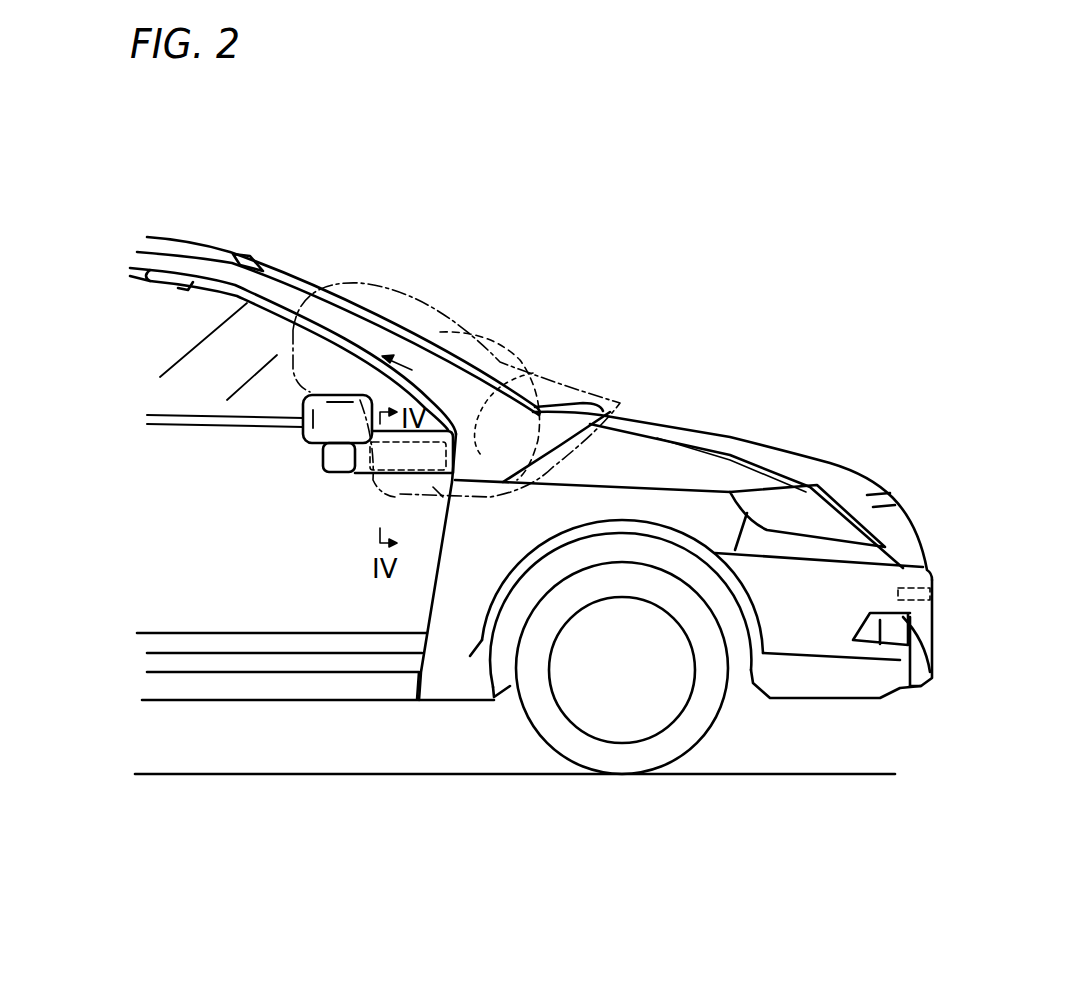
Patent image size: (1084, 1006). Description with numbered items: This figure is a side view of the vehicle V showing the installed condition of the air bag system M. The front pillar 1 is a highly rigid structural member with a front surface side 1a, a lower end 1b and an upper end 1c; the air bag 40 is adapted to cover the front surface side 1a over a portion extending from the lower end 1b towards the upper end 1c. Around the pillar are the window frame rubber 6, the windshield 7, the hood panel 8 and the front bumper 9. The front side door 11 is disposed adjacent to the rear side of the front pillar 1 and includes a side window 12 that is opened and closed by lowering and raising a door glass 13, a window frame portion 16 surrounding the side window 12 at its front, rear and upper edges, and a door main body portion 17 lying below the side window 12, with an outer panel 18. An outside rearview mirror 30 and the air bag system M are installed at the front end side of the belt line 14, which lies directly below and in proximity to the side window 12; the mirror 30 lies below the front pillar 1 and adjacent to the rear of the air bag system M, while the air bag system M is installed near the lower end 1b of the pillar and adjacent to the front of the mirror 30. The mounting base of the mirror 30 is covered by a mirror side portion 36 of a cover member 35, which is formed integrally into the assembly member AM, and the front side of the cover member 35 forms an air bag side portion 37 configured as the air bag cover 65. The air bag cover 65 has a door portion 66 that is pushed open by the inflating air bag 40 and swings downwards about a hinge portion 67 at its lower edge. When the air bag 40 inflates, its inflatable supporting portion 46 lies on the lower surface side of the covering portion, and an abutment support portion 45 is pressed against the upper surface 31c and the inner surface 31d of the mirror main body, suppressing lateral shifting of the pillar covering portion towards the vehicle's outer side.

The front pillar 1 is at (342, 270).
The front surface side 1a is at (398, 345).
The lower end 1b is at (487, 345).
The upper end 1c is at (273, 288).
The window frame rubber 6 is at (262, 262).
The windshield 7 is at (343, 396).
The hood panel 8 is at (745, 441).
The front bumper 9 is at (897, 578).
The front side door 11 is at (315, 723).
The side window 12 is at (292, 299).
The door glass 13 is at (134, 304).
The belt line 14 is at (174, 437).
The window frame portion 16 is at (163, 273).
The door main body portion 17 is at (315, 723).
The outer panel 18 is at (245, 603).
The outside rearview mirror 30 is at (303, 420).
The upper surface 31c is at (367, 396).
The inner surface 31d is at (452, 335).
The cover member 35 is at (329, 524).
The mirror side portion 36 is at (345, 465).
The air bag side portion 37 is at (357, 499).
The air bag 40 is at (450, 308).
The abutment support portion 45 is at (486, 303).
The inflatable supporting portion 46 is at (613, 410).
The air bag cover 65 is at (380, 475).
The door portion 66 is at (413, 465).
The hinge portion 67 is at (533, 373).
The air bag system M is at (447, 501).
The assembly member AM is at (282, 454).
The vehicle V is at (772, 275).